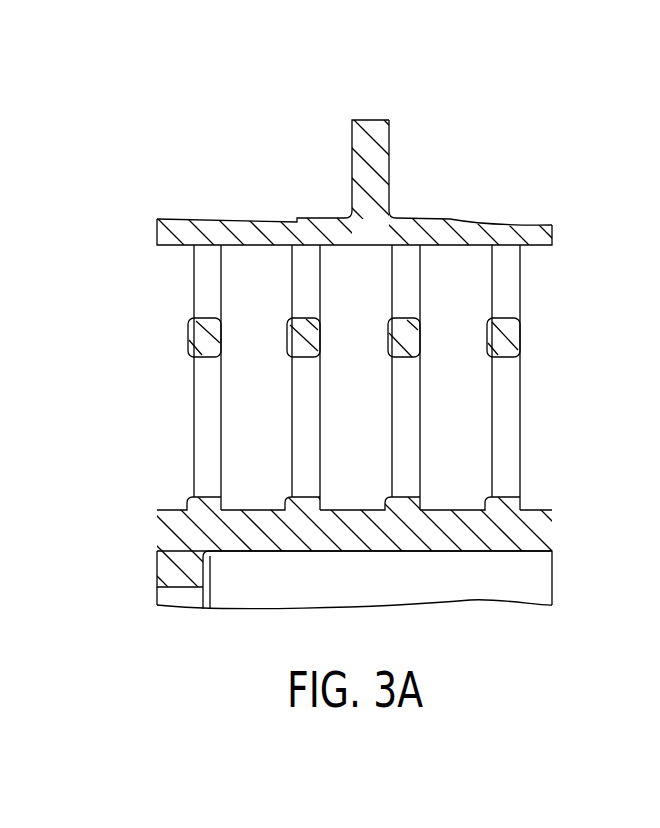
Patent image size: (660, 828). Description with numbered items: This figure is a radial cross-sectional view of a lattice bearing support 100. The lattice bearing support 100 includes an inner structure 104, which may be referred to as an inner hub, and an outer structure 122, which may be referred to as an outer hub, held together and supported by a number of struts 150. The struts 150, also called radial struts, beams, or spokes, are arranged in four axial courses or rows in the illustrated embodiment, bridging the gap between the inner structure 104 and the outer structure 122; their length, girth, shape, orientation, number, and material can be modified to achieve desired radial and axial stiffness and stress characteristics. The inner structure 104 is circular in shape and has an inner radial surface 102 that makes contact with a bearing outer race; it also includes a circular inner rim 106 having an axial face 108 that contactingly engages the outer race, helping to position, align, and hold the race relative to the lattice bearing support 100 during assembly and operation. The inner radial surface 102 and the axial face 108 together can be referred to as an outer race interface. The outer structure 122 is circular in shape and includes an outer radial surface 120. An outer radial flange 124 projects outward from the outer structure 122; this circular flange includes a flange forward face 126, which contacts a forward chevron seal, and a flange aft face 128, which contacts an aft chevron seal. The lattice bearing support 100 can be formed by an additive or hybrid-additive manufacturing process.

The lattice bearing support 100 is at (192, 132).
The inner radial surface 102 is at (445, 551).
The inner structure 104 is at (545, 531).
The inner rim 106 is at (172, 567).
The axial face 108 is at (205, 567).
The outer radial surface 120 is at (268, 219).
The outer structure 122 is at (545, 237).
The outer radial flange 124 is at (372, 128).
The flange forward face 126 is at (350, 213).
The flange aft face 128 is at (390, 163).
The struts 150 is at (505, 297).